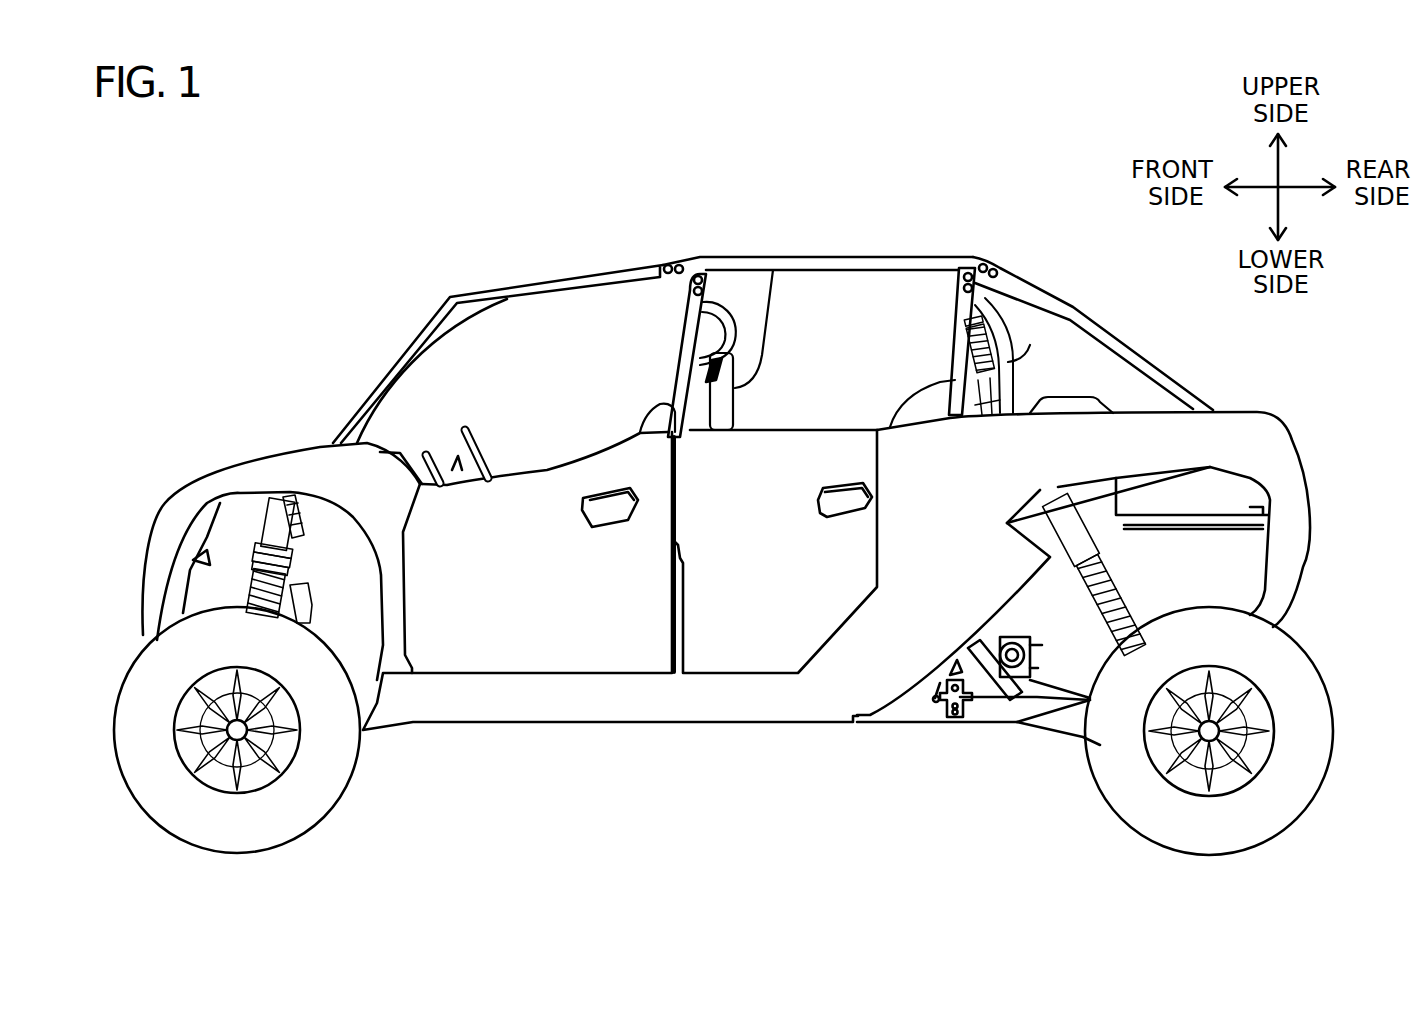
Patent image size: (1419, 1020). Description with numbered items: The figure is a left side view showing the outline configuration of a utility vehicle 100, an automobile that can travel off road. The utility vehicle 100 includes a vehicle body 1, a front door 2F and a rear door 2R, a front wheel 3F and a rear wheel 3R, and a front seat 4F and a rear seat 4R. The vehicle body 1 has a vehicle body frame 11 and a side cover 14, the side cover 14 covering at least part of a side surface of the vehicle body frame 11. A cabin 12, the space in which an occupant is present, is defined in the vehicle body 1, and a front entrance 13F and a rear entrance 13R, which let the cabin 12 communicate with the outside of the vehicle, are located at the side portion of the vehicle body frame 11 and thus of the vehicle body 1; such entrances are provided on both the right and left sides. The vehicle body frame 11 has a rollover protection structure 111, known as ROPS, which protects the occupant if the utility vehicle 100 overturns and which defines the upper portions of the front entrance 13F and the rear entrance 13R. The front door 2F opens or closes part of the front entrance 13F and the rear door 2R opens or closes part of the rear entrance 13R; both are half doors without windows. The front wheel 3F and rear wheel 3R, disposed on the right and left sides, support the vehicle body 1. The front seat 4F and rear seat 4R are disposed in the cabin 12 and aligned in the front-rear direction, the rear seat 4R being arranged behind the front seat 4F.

The utility vehicle 100 is at (423, 192).
The vehicle body 1 is at (606, 248).
The vehicle body frame 11 is at (944, 250).
The rollover protection structure 111 is at (867, 255).
The cabin 12 is at (550, 360).
The front entrance 13F is at (416, 382).
The rear entrance 13R is at (718, 330).
The side cover 14 is at (1267, 444).
The front door 2F is at (545, 623).
The rear door 2R is at (750, 632).
The front wheel 3F is at (327, 817).
The rear wheel 3R is at (1120, 810).
The front seat 4F is at (773, 270).
The rear seat 4R is at (1030, 345).